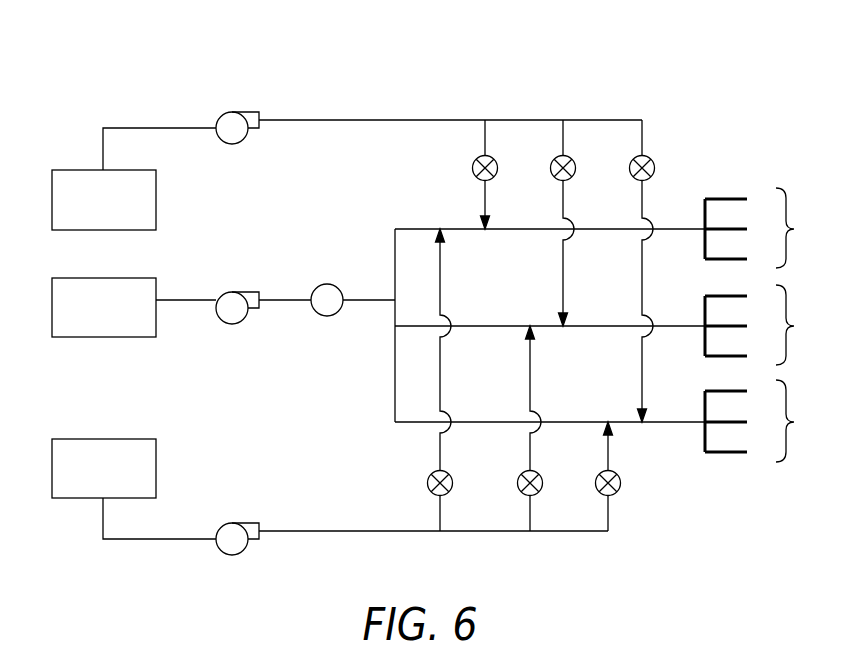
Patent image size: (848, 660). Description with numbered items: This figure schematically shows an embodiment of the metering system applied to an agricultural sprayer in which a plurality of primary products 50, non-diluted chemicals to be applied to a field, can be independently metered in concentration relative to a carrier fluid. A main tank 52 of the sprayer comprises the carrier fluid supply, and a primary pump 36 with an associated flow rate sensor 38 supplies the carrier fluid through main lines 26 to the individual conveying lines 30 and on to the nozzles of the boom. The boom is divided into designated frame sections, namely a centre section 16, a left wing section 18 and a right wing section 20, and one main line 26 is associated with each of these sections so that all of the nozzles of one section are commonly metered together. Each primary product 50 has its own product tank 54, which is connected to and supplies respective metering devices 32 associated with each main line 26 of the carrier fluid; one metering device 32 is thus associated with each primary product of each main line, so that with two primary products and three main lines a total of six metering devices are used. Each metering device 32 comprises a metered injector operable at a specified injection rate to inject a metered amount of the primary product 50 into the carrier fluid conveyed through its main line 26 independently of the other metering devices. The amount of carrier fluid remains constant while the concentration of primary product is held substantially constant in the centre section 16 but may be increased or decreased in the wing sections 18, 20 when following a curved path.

The centre section 16 is at (762, 325).
The left wing section 18 is at (762, 211).
The right wing section 20 is at (762, 421).
The main lines 26 is at (417, 228).
The individual conveying lines 30 is at (727, 258).
The metering devices 32 is at (495, 160).
The primary pump 36 is at (232, 292).
The flow rate sensor 38 is at (326, 284).
The primary products 50 is at (88, 170).
The main tank 52 is at (88, 278).
The product tank 54 is at (157, 199).